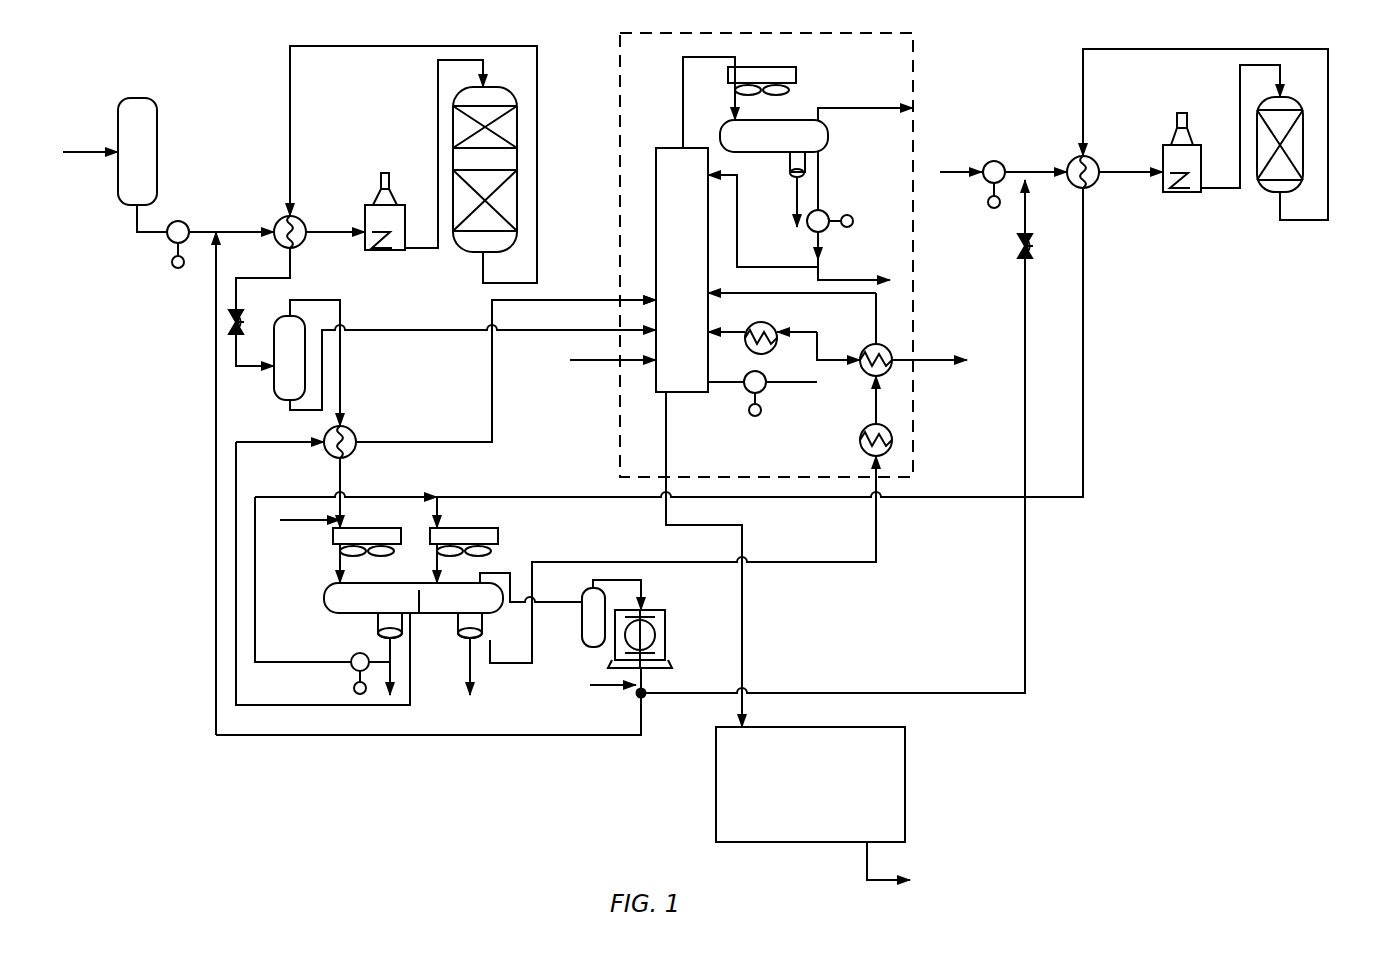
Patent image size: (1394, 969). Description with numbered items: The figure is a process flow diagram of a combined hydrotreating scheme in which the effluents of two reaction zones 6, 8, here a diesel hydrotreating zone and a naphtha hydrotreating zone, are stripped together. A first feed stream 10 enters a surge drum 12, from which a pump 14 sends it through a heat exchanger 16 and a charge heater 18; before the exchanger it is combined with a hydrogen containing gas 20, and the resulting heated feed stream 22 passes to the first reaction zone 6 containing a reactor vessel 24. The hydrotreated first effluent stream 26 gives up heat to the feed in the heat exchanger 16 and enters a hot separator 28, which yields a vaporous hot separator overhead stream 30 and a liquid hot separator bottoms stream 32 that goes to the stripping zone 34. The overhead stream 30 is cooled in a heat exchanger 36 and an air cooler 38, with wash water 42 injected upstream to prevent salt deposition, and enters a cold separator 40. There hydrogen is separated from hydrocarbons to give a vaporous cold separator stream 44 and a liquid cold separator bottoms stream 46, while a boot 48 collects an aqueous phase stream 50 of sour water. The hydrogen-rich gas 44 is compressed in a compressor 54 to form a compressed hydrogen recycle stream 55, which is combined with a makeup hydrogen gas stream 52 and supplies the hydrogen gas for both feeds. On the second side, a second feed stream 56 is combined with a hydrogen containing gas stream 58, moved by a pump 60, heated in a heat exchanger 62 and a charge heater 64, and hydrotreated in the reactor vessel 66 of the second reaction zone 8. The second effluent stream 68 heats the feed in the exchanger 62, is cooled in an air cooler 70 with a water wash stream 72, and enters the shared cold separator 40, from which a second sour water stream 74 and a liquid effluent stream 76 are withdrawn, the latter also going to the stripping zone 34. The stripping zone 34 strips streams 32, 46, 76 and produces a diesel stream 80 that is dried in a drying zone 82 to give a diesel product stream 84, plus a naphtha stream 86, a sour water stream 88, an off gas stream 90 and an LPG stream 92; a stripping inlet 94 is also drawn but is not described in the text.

The first reaction zone 6 is at (550, 55).
The second reaction zone 8 is at (1258, 196).
The first feed stream 10 is at (75, 144).
The surge drum 12 is at (132, 96).
The pump 14 is at (184, 222).
The heat exchanger 16 is at (302, 216).
The charge heater 18 is at (372, 190).
The hydrogen containing gas 20 is at (214, 374).
The heated feed stream 22 is at (438, 80).
The reactor vessel 24 is at (460, 254).
The first effluent stream 26 is at (488, 298).
The hot separator 28 is at (272, 376).
The vaporous hot separator overhead stream 30 is at (328, 300).
The liquid hot separator bottoms stream 32 is at (322, 366).
The stripping zone 34 is at (913, 40).
The heat exchanger 36 is at (354, 430).
The air cooler 38 is at (372, 520).
The cold separator 40 is at (324, 598).
The wash water 42 is at (296, 518).
The vaporous cold separator stream 44 is at (522, 572).
The liquid cold separator bottoms stream 46 is at (566, 299).
The boot 48 is at (378, 626).
The aqueous phase stream 50 is at (348, 660).
The makeup hydrogen gas stream 52 is at (616, 688).
The compressor 54 is at (696, 586).
The compressed hydrogen recycle stream 55 is at (648, 690).
The second feed stream 56 is at (955, 168).
The hydrogen containing gas stream 58 is at (1024, 282).
The pump 60 is at (998, 164).
The heat exchanger 62 is at (1100, 156).
The charge heater 64 is at (1182, 110).
The reactor vessel 66 is at (1295, 96).
The second effluent stream 68 is at (1313, 222).
The air cooler 70 is at (464, 530).
The water wash stream 72 is at (412, 494).
The second sour water stream 74 is at (474, 662).
The liquid effluent stream 76 is at (490, 642).
The diesel stream 80 is at (664, 402).
The drying zone 82 is at (897, 728).
The diesel product stream 84 is at (878, 878).
The naphtha stream 86 is at (929, 354).
The sour water stream 88 is at (787, 194).
The off gas stream 90 is at (843, 108).
The LPG stream 92 is at (820, 180).
The stripping steam line 94 is at (572, 370).